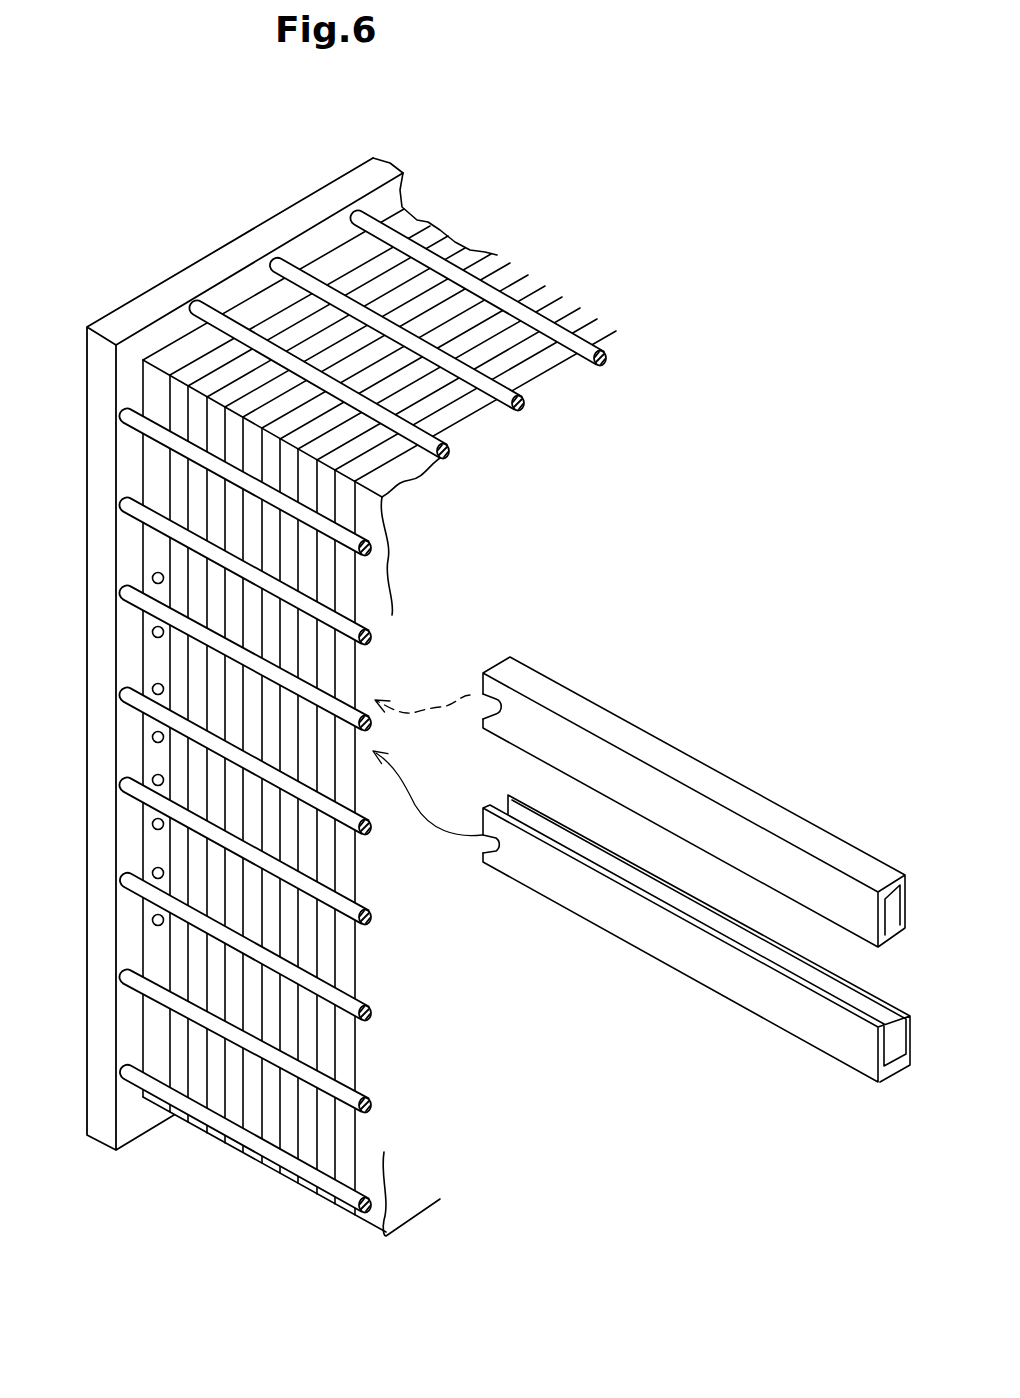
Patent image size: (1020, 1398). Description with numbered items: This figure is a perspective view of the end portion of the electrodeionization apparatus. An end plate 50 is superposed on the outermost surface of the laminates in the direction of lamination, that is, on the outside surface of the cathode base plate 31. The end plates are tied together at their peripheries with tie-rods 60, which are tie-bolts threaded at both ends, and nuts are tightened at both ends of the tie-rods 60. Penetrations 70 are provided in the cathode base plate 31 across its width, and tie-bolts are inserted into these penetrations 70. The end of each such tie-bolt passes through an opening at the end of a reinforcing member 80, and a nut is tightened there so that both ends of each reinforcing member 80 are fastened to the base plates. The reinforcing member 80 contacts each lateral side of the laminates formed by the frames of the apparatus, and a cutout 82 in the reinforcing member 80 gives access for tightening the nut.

The cathode base plate 31 is at (330, 262).
The end plate 50 is at (224, 265).
The tie-rod 60 is at (606, 359).
The penetration 70 is at (155, 826).
The reinforcing member 80 is at (729, 747).
The cutout 82 is at (496, 841).